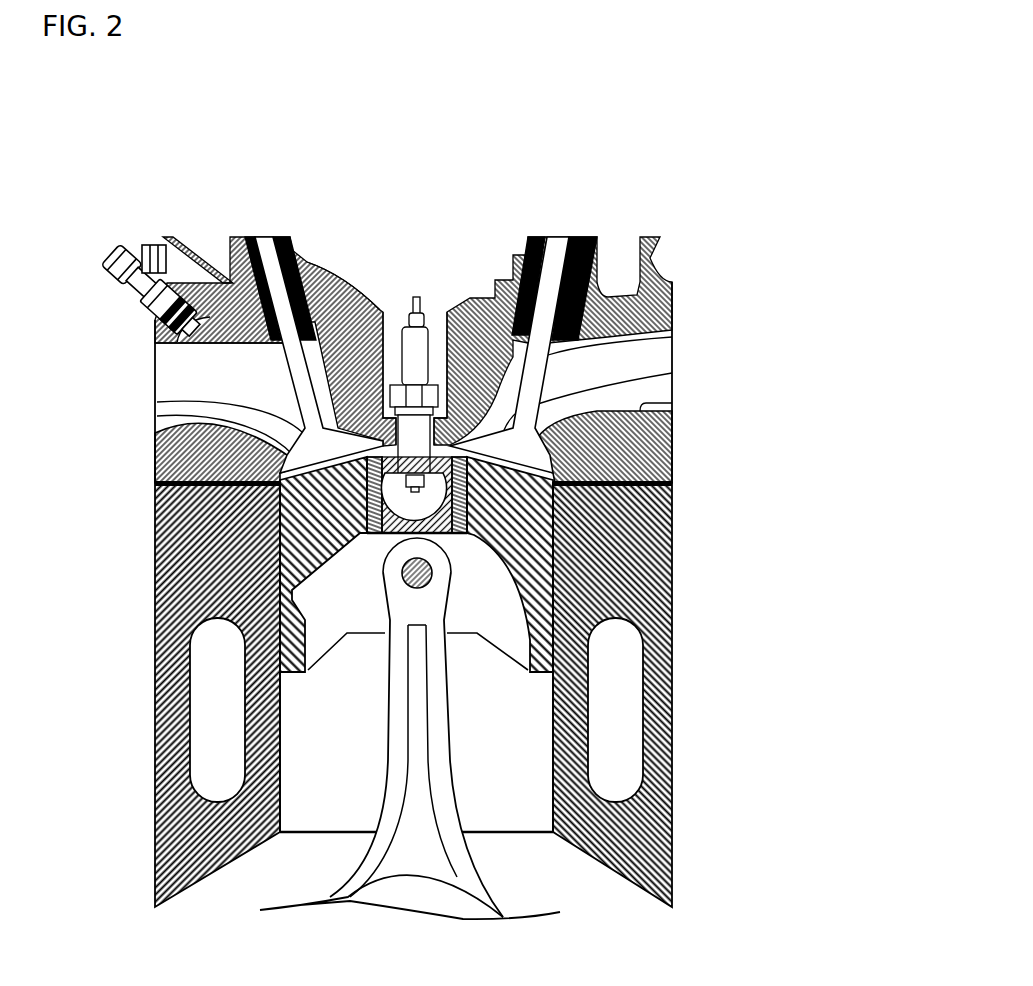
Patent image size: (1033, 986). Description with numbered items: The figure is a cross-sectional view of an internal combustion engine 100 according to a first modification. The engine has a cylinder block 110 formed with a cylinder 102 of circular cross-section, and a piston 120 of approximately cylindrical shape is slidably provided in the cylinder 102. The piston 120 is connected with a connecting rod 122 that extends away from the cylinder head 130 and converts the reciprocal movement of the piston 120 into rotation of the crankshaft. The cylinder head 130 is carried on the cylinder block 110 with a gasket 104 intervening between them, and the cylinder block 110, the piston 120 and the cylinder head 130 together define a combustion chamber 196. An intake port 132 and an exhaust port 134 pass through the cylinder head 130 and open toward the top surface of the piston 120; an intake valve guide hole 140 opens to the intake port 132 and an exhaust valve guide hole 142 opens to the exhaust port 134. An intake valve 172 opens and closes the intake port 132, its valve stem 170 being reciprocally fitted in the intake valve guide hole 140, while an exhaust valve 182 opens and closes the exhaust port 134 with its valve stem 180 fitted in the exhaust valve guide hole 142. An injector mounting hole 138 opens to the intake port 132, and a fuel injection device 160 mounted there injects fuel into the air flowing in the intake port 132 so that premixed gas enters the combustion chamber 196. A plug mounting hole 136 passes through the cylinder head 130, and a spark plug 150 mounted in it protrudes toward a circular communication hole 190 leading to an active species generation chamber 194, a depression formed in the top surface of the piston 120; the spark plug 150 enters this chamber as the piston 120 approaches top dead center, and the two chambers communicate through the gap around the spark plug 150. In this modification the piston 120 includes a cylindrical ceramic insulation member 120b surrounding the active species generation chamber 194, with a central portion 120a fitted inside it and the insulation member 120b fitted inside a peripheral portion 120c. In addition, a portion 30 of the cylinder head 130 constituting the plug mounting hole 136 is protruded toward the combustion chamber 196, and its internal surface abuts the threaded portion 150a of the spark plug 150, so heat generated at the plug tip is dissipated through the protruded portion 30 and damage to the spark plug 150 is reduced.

The internal combustion engine 100 is at (627, 108).
The protruded portion 30 is at (235, 556).
The cylinder 102 is at (283, 783).
The gasket 104 is at (153, 488).
The cylinder block 110 is at (672, 575).
The piston 120 is at (515, 677).
The central portion 120a is at (456, 548).
The insulation member 120b is at (455, 533).
The peripheral portion 120c is at (525, 523).
The connecting rod 122 is at (457, 822).
The cylinder head 130 is at (672, 447).
The intake port 132 is at (157, 418).
The exhaust port 134 is at (672, 403).
The plug mounting hole 136 is at (443, 320).
The injector mounting hole 138 is at (210, 330).
The intake valve guide hole 140 is at (275, 353).
The exhaust valve guide hole 142 is at (672, 337).
The spark plug 150 is at (402, 357).
The threaded portion 150a is at (368, 310).
The fuel injection device 160 is at (118, 285).
The valve stem 170 is at (276, 253).
The intake valve 172 is at (200, 404).
The valve stem 180 is at (557, 245).
The exhaust valve 182 is at (672, 373).
The communication hole 190 is at (153, 497).
The active species generation chamber 194 is at (380, 540).
The combustion chamber 196 is at (153, 470).